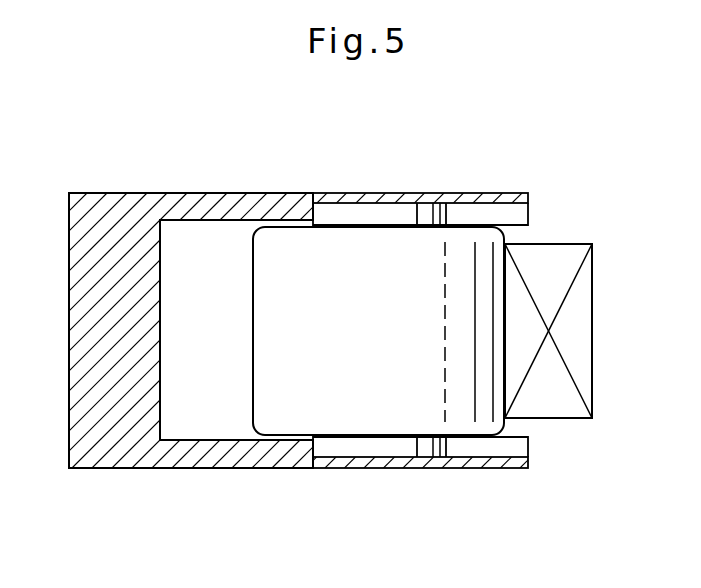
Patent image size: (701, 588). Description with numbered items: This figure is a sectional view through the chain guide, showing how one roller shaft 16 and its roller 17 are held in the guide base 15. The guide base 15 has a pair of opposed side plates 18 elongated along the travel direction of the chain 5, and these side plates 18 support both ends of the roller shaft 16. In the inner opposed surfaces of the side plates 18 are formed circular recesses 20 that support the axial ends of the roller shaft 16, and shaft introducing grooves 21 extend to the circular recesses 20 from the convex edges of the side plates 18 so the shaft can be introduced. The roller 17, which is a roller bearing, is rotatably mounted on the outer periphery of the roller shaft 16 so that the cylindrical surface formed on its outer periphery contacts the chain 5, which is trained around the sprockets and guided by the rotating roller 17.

The chain 5 is at (577, 320).
The guide base 15 is at (177, 193).
The roller shaft 16 is at (385, 222).
The roller 17 is at (488, 235).
The side plate 18 is at (528, 198).
The circular recess 20 is at (315, 212).
The shaft introducing groove 21 is at (467, 204).